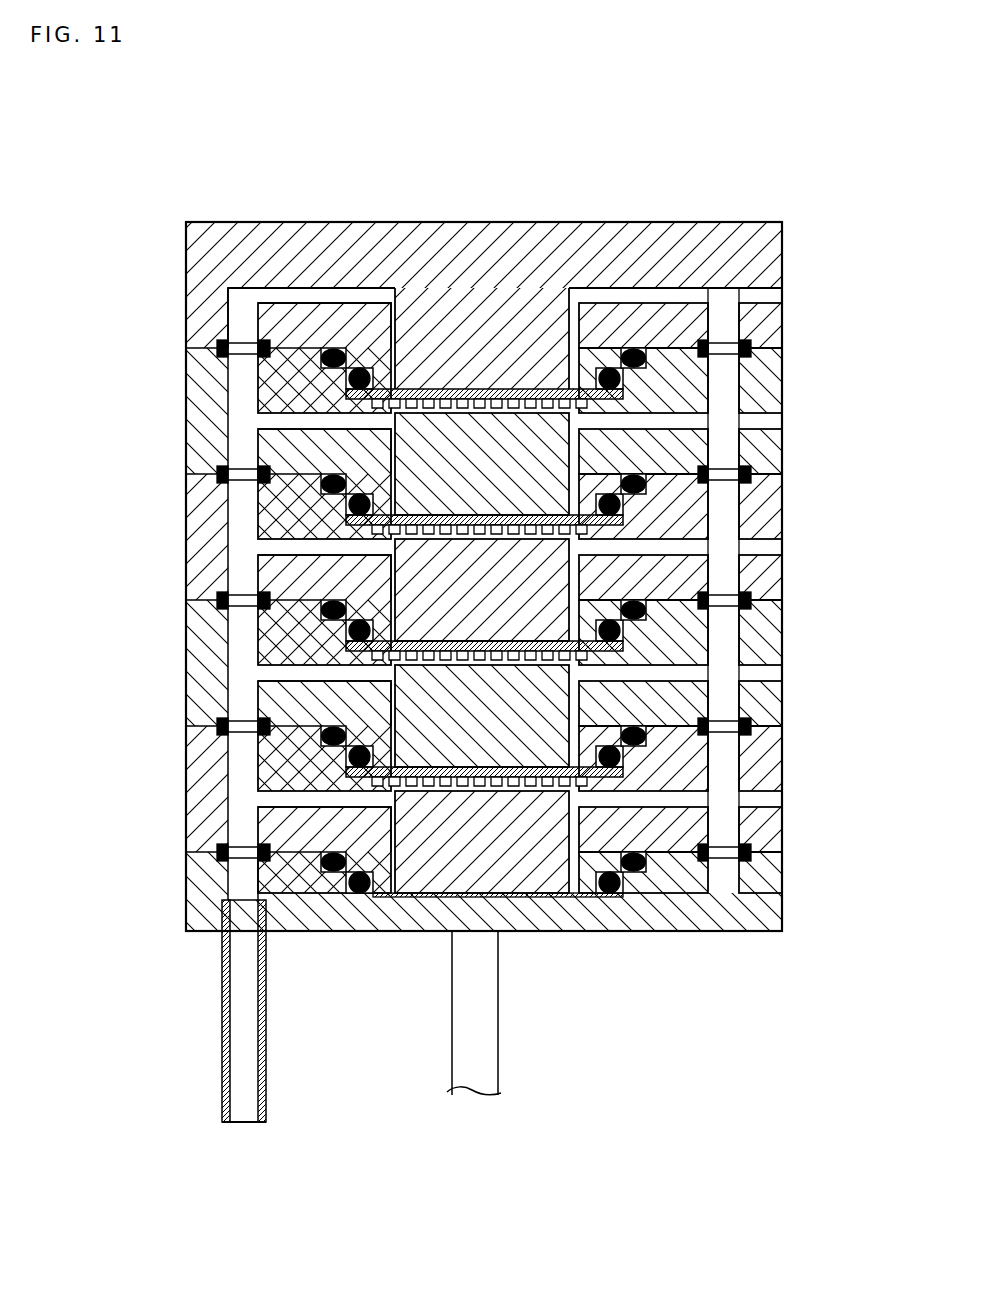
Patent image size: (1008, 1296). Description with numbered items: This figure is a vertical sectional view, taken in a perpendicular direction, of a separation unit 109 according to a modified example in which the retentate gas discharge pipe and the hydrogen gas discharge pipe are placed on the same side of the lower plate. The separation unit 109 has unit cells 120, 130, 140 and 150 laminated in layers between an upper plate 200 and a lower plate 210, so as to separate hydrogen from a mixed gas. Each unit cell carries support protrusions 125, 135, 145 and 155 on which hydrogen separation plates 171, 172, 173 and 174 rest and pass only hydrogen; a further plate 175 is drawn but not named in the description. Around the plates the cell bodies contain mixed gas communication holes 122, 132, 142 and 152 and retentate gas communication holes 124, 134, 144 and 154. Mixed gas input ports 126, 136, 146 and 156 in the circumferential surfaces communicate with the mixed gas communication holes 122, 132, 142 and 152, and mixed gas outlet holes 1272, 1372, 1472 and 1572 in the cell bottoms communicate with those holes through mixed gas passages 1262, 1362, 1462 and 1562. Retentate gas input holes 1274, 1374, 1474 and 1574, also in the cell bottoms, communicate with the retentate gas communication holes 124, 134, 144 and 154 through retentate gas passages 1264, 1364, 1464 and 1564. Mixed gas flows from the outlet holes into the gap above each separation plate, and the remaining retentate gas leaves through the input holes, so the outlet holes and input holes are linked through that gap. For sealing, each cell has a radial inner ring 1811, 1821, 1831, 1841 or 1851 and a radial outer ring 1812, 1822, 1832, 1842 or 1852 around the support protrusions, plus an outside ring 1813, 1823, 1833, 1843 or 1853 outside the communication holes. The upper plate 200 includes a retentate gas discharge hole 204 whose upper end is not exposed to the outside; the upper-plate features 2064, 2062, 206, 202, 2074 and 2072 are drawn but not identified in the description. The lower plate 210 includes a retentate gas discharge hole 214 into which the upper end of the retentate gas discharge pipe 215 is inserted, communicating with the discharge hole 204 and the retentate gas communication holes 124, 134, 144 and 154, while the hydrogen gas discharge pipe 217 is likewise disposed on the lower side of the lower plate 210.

The separation unit 109 is at (690, 113).
The upper plate 200 is at (140, 283).
The retentate gas discharge hole 204 is at (239, 318).
The upper channel portion 2064 is at (337, 296).
The upper layer wiring block 2062 is at (731, 288).
The upper layer side block 206 is at (807, 307).
The upper layer channel 202 is at (792, 318).
The first connection pads 2074 is at (395, 368).
The upper layer central block 2072 is at (482, 338).
The hydrogen separation plate 171 is at (484, 358).
The support protrusion 125 is at (479, 427).
The radial inner ring 1811 is at (600, 319).
The radial outer ring 1812 is at (660, 309).
The outside ring 1813 is at (770, 341).
The unit cell 120 is at (126, 411).
The retentate gas communication hole 124 is at (239, 411).
The retentate gas passage 1264 is at (324, 362).
The mixed gas passage 1262 is at (731, 411).
The mixed gas input port 126 is at (807, 411).
The mixed gas communication hole 122 is at (792, 411).
The retentate gas input hole 1274 is at (395, 494).
The mixed gas outlet hole 1272 is at (482, 464).
The hydrogen separation plate 172 is at (484, 484).
The support protrusion 135 is at (479, 555).
The radial inner ring 1821 is at (604, 480).
The radial outer ring 1822 is at (659, 462).
The outside ring 1823 is at (770, 467).
The unit cell 130 is at (126, 537).
The retentate gas communication hole 134 is at (239, 537).
The retentate gas passage 1364 is at (324, 488).
The mixed gas passage 1362 is at (731, 537).
The mixed gas input port 136 is at (807, 537).
The mixed gas communication hole 132 is at (792, 537).
The retentate gas input hole 1374 is at (395, 620).
The mixed gas outlet hole 1372 is at (482, 590).
The hydrogen separation plate 173 is at (484, 610).
The support protrusion 145 is at (479, 682).
The radial inner ring 1831 is at (604, 606).
The radial outer ring 1832 is at (659, 588).
The outside ring 1833 is at (770, 593).
The unit cell 140 is at (126, 663).
The retentate gas communication hole 144 is at (239, 663).
The retentate gas passage 1464 is at (324, 614).
The mixed gas passage 1462 is at (731, 663).
The mixed gas input port 146 is at (807, 663).
The mixed gas communication hole 142 is at (792, 663).
The retentate gas input hole 1474 is at (395, 746).
The mixed gas outlet hole 1472 is at (482, 716).
The hydrogen separation plate 174 is at (484, 736).
The support protrusion 155 is at (479, 808).
The radial inner ring 1841 is at (604, 732).
The radial outer ring 1842 is at (659, 714).
The outside ring 1843 is at (770, 719).
The unit cell 150 is at (126, 789).
The retentate gas communication hole 154 is at (239, 789).
The retentate gas passage 1564 is at (324, 740).
The mixed gas passage 1562 is at (731, 789).
The mixed gas input port 156 is at (807, 789).
The mixed gas communication hole 152 is at (792, 789).
The retentate gas input hole 1574 is at (395, 872).
The mixed gas outlet hole 1572 is at (482, 842).
The fifth semiconductor chip 175 is at (498, 948).
The radial inner ring 1851 is at (604, 858).
The radial outer ring 1852 is at (659, 840).
The outside ring 1853 is at (770, 845).
The lower plate 210 is at (140, 912).
The retentate gas discharge hole 214 is at (237, 883).
The retentate gas discharge pipe 215 is at (267, 1010).
The hydrogen gas discharge pipe 217 is at (498, 1042).